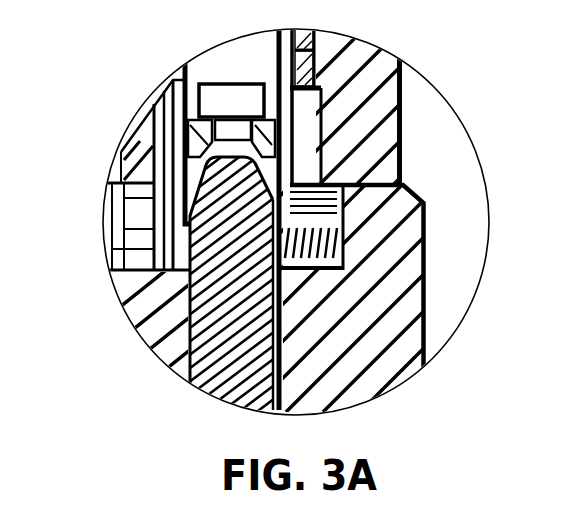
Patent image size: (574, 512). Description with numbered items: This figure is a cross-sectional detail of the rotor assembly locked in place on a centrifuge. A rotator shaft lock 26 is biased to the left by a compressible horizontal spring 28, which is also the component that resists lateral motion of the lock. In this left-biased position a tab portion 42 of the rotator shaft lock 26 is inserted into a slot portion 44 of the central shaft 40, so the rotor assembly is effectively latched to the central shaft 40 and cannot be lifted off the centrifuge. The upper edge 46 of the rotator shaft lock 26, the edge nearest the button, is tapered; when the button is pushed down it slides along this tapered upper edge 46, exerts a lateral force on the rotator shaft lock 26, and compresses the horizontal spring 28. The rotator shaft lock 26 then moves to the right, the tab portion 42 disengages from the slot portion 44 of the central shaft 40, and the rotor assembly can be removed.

The rotator shaft lock 26 is at (150, 252).
The horizontal spring 28 is at (347, 242).
The central shaft 40 is at (282, 353).
The tab portion 42 is at (280, 317).
The slot portion 44 is at (262, 282).
The upper edge 46 is at (160, 93).